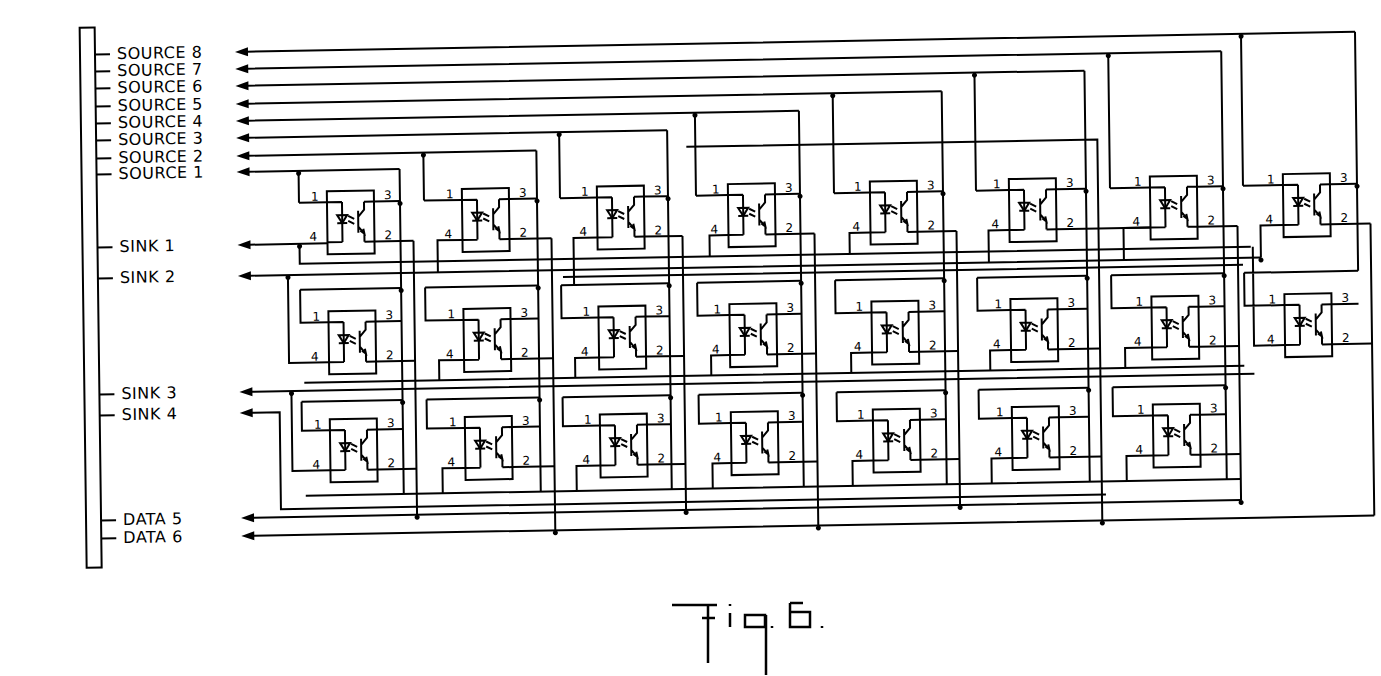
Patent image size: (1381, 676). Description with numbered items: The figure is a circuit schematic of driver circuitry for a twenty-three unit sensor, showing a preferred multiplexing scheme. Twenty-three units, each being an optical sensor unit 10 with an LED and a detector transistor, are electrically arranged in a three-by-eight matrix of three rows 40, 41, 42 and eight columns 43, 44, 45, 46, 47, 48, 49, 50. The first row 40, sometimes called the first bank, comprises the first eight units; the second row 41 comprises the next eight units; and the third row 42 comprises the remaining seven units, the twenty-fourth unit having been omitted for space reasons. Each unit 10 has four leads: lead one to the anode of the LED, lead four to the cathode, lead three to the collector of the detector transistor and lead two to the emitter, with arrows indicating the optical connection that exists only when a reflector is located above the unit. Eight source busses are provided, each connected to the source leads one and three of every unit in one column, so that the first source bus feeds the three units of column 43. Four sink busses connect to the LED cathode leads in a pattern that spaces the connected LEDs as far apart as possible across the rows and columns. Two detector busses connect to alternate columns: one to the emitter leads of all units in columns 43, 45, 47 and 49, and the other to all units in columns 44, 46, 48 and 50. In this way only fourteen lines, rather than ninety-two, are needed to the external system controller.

The unit 10 is at (365, 223).
The first row 40 is at (794, 365).
The second row 41 is at (270, 330).
The third row 42 is at (270, 463).
The column 43 is at (347, 546).
The column 44 is at (485, 542).
The column 45 is at (618, 540).
The column 46 is at (750, 538).
The column 47 is at (890, 536).
The column 48 is at (1033, 536).
The column 49 is at (1178, 534).
The column 50 is at (1307, 533).